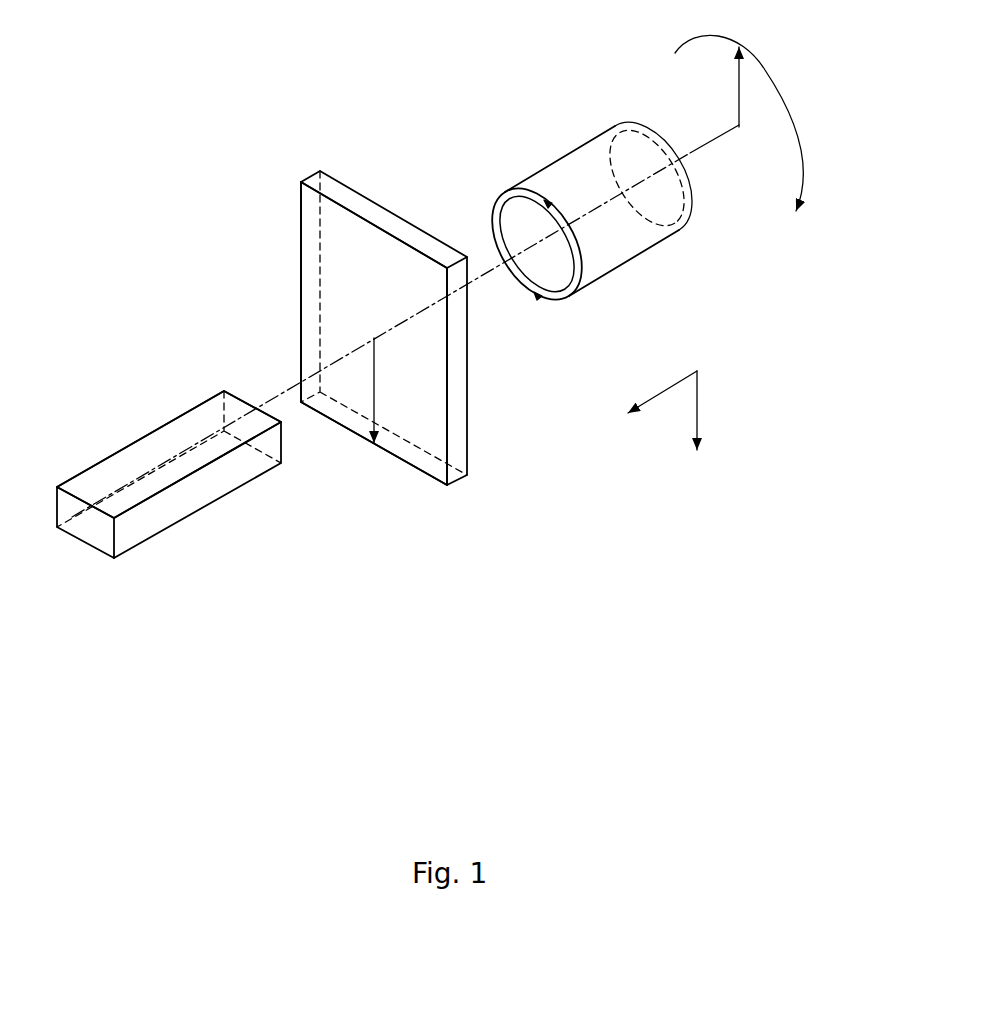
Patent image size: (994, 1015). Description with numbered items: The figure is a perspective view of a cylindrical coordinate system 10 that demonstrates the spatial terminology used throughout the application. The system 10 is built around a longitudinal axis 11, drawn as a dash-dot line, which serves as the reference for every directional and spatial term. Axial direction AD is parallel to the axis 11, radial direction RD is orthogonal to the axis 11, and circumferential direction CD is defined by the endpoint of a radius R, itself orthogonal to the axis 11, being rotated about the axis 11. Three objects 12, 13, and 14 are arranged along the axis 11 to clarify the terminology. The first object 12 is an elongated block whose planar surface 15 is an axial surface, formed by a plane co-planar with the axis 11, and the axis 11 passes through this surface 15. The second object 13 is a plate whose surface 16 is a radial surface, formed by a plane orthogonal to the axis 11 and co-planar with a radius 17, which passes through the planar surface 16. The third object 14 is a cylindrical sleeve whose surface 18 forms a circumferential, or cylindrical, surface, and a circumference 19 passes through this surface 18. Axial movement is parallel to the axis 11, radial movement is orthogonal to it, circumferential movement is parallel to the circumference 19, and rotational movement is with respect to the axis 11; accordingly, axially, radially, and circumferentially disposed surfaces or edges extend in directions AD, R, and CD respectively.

The cylindrical coordinate system 10 is at (258, 215).
The longitudinal axis 11 is at (675, 150).
The object 12 is at (169, 502).
The object 13 is at (379, 347).
The object 14 is at (543, 217).
The axial surface 15 is at (133, 458).
The radial surface 16 is at (313, 288).
The radius 17 is at (375, 383).
The circumferential surface 18 is at (563, 155).
The circumference 19 is at (492, 208).
The radius R is at (738, 82).
The circumferential direction CD is at (773, 70).
The axial direction AD is at (662, 390).
The radial direction RD is at (698, 408).